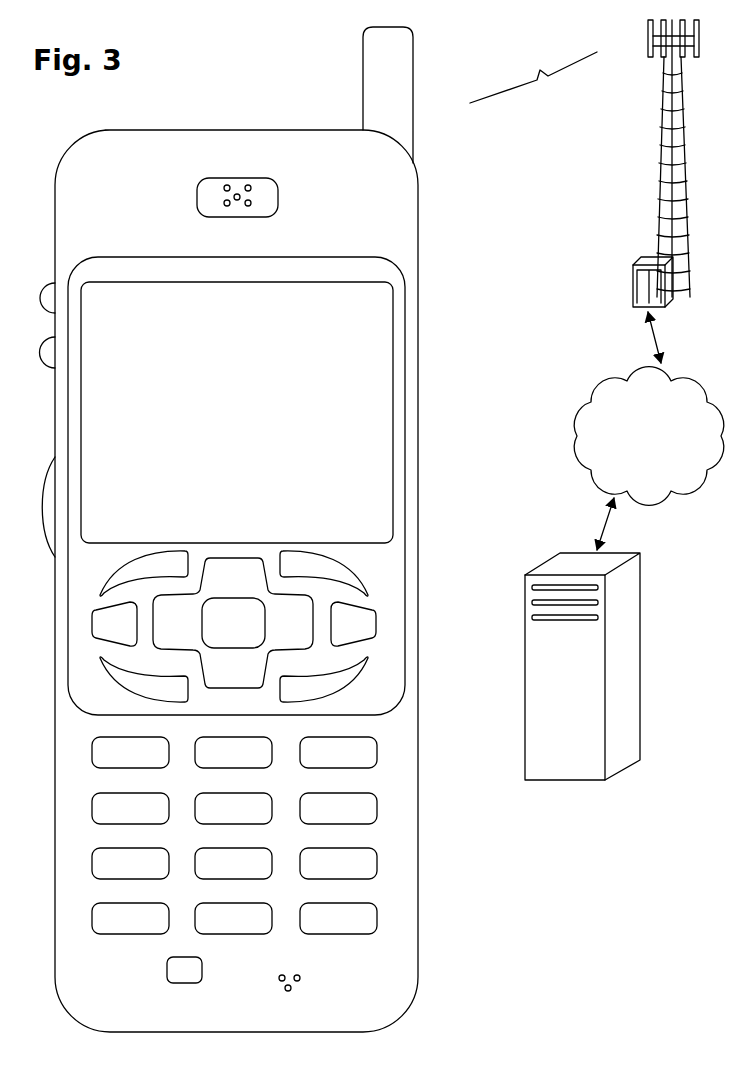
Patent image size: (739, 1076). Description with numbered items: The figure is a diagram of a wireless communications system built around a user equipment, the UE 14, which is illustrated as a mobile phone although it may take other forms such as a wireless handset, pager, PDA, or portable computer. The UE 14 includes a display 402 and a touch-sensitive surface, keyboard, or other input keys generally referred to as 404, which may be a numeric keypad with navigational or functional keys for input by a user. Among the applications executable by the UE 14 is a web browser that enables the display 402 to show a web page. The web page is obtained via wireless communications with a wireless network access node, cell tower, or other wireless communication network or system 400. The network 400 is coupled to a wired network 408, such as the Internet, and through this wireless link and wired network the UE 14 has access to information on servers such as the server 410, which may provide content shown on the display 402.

The UE 14 is at (98, 1027).
The wireless communication network or system 400 is at (660, 177).
The display 402 is at (400, 295).
The input keys 404 is at (425, 552).
The wired network 408 is at (578, 477).
The server 410 is at (567, 781).